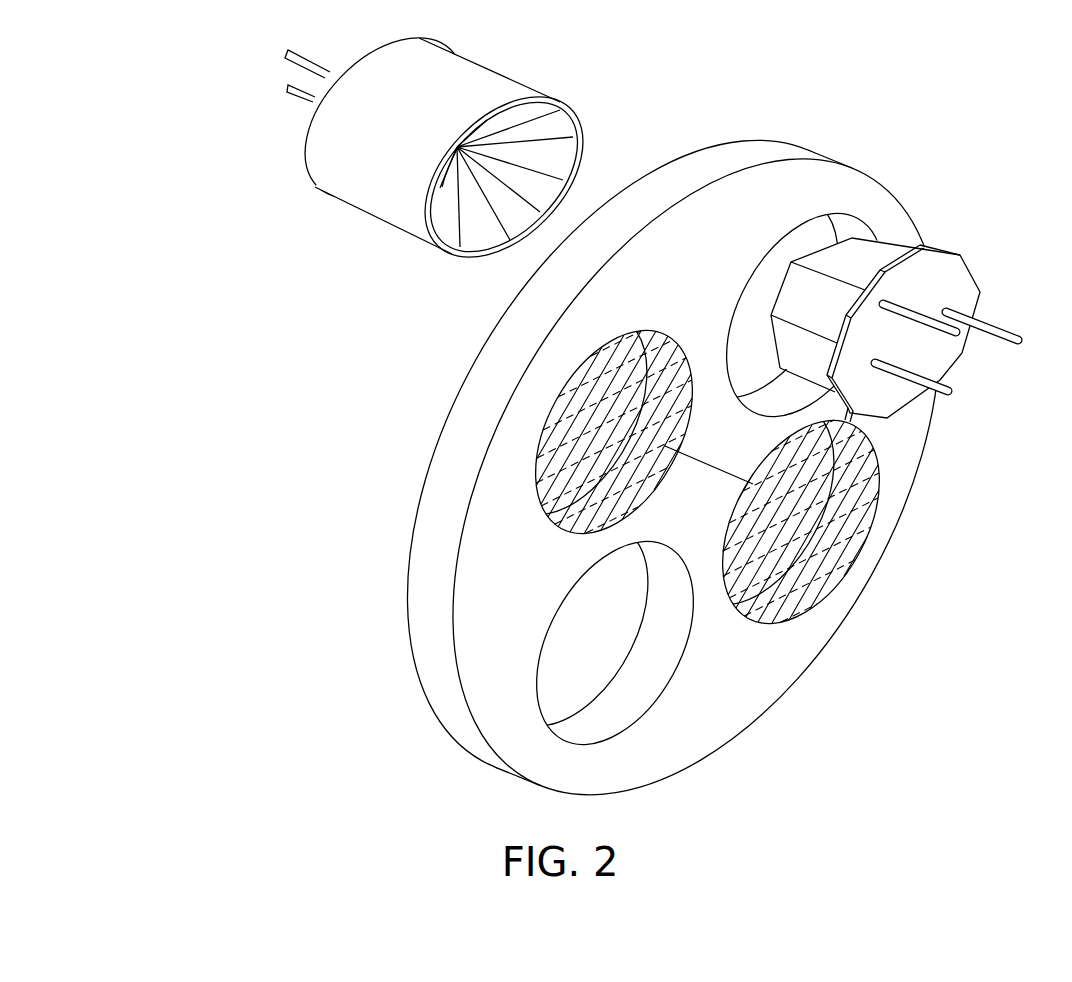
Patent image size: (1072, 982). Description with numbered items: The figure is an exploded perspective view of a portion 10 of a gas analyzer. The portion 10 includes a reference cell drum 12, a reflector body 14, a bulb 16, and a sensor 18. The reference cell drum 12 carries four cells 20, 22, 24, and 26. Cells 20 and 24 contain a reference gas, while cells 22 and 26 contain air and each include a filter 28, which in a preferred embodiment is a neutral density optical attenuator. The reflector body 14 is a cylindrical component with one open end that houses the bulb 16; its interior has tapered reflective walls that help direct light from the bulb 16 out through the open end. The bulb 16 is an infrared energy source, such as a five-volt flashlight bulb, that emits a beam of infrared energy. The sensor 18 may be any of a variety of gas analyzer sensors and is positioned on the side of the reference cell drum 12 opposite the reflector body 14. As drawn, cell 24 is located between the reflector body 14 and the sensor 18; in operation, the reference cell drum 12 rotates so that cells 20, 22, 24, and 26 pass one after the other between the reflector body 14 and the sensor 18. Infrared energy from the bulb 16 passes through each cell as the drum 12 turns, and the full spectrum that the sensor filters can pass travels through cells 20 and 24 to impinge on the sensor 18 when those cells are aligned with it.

The portion of a gas analyzer 10 is at (228, 178).
The reference cell drum 12 is at (751, 150).
The reflector body 14 is at (467, 57).
The bulb 16 is at (563, 143).
The sensor 18 is at (950, 360).
The cell 20 is at (647, 705).
The cell 22 is at (636, 332).
The cell 24 is at (854, 213).
The cell 26 is at (843, 577).
The filter 28 is at (700, 465).